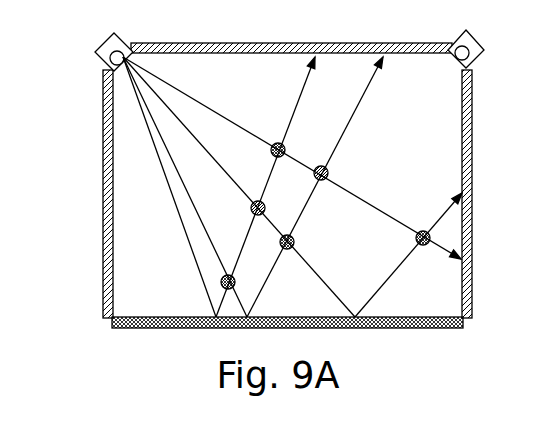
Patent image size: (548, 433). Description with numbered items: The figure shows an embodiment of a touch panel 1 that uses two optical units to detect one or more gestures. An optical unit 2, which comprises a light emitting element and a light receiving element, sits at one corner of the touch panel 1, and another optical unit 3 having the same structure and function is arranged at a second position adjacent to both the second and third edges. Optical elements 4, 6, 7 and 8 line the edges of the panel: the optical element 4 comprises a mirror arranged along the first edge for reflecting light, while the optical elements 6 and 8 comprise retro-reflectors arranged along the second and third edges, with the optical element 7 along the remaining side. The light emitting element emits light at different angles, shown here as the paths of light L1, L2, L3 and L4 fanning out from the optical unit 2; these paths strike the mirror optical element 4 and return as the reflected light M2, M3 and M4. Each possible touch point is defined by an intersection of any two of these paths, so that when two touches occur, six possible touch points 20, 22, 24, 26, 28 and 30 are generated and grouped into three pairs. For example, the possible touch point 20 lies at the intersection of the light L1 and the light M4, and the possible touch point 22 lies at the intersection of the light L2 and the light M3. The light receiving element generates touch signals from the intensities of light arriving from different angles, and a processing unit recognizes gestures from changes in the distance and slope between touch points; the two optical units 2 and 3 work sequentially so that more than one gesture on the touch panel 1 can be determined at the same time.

The touch panel 1 is at (276, 182).
The optical unit 2 is at (97, 55).
The optical unit 3 is at (477, 50).
The optical element 4 is at (278, 329).
The optical element 6 is at (472, 190).
The optical element 7 is at (103, 130).
The optical element 8 is at (283, 47).
The possible touch point 20 is at (278, 143).
The possible touch point 22 is at (294, 242).
The possible touch point 24 is at (328, 172).
The possible touch point 26 is at (252, 210).
The possible touch point 28 is at (236, 282).
The possible touch point 30 is at (415, 238).
The light L1 is at (292, 158).
The light L2 is at (239, 187).
The light L3 is at (185, 187).
The light L4 is at (169, 187).
The light M2 is at (408, 251).
The light M3 is at (315, 187).
The light M4 is at (265, 186).